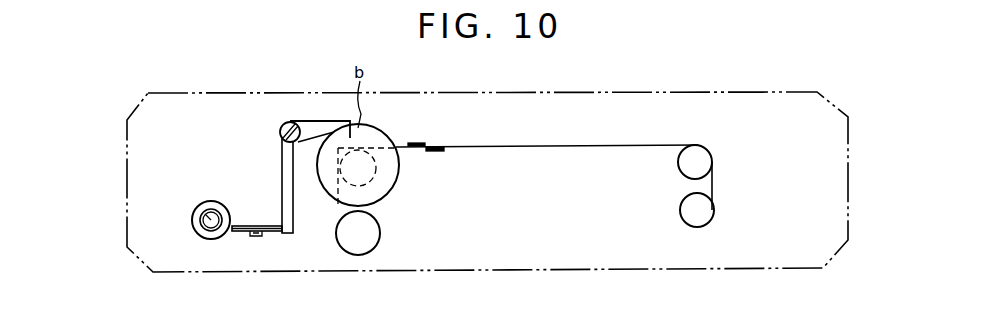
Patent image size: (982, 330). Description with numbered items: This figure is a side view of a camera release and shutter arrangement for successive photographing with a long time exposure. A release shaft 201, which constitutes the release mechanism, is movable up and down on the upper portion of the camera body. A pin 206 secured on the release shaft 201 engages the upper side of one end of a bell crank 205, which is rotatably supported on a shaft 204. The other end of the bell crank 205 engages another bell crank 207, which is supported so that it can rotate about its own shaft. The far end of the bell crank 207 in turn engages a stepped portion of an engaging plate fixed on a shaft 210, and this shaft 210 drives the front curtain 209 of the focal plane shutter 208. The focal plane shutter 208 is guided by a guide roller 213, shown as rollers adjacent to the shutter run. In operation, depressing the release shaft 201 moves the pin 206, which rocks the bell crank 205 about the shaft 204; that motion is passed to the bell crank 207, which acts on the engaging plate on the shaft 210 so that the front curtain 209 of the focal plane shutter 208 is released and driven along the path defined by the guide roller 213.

The release shaft 201 is at (193, 219).
The shaft 204 is at (253, 237).
The bell crank 205 is at (268, 225).
The pin 206 is at (281, 128).
The bell crank 207 is at (282, 152).
The focal plane shutter 208 is at (614, 144).
The front curtain 209 is at (432, 145).
The shaft 210 is at (372, 175).
The guide roller 213 is at (377, 230).